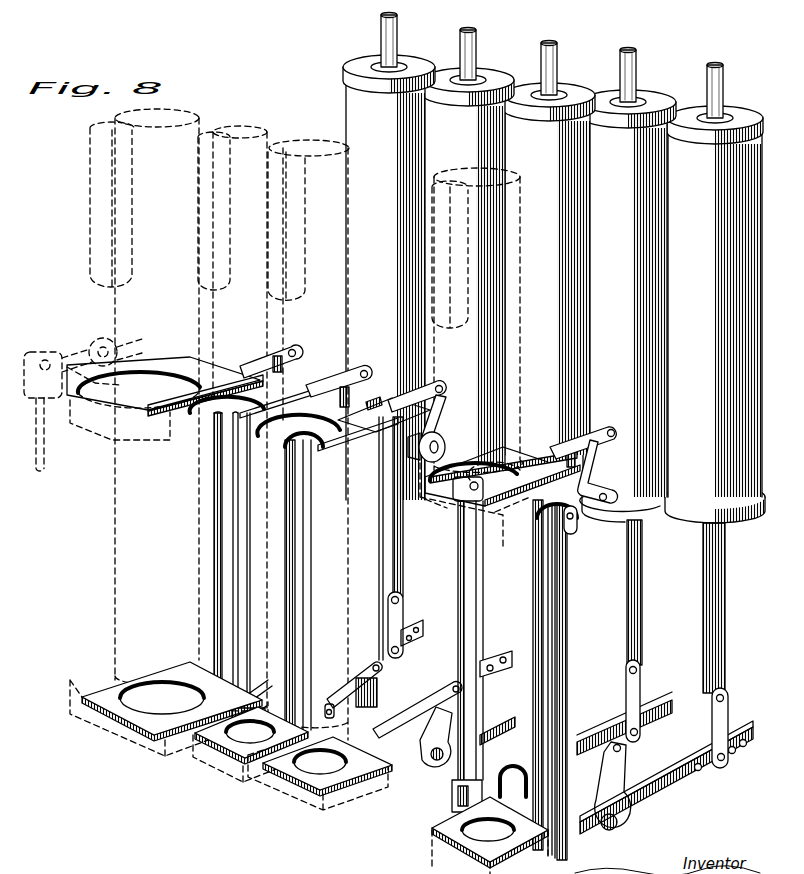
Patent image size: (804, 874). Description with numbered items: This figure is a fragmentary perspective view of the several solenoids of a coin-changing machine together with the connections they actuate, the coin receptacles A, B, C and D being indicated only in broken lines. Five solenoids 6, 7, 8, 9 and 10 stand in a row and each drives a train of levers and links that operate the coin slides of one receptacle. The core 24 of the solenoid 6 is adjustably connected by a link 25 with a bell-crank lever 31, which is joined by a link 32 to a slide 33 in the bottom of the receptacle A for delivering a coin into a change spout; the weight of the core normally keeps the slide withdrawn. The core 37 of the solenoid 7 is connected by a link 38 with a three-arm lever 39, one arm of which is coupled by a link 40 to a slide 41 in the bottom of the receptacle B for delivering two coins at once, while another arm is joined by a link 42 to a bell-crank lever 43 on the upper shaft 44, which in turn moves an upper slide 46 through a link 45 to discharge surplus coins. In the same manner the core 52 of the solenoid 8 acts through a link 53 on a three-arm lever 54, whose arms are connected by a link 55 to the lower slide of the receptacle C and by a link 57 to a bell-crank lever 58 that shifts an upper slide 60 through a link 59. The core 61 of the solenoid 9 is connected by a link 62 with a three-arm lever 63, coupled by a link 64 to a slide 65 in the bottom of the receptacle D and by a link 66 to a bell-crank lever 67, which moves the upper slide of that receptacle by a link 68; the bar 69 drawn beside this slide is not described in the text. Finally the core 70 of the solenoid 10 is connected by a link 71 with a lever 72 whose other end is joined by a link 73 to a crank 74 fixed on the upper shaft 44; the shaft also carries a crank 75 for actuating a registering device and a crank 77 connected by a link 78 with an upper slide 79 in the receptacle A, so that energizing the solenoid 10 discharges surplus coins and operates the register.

The solenoid 9 is at (410, 56).
The solenoid 7 is at (500, 68).
The solenoid 6 is at (580, 84).
The solenoid 10 is at (656, 95).
The solenoid 8 is at (745, 108).
The coin receptacle D is at (185, 112).
The coin receptacle B is at (248, 128).
The coin receptacle A is at (307, 140).
The coin receptacle C is at (509, 178).
The crank 75 is at (65, 350).
The upper shaft 44 is at (143, 363).
The support bar 69 is at (218, 366).
The link 68 is at (255, 352).
The bell-crank lever 67 is at (283, 368).
The link 66 is at (238, 560).
The link 64 is at (265, 643).
The slide 65 is at (152, 733).
The upper slide 46 is at (295, 387).
The link 45 is at (333, 385).
The bell-crank lever 43 is at (368, 403).
The upper slide 79 is at (372, 407).
The link 78 is at (437, 381).
The crank 77 is at (437, 410).
The link 42 is at (300, 596).
The core 61 is at (402, 572).
The link 62 is at (403, 620).
The three-arm lever 63 is at (348, 660).
The link 40 is at (377, 688).
The three-arm lever 39 is at (431, 690).
The link 32 is at (430, 707).
The slide 41 is at (238, 755).
The slide 33 is at (320, 791).
The crank 74 is at (455, 492).
The upper slide 60 is at (527, 453).
The link 59 is at (583, 432).
The bell-crank lever 58 is at (605, 488).
The core 37 is at (530, 556).
The core 24 is at (567, 625).
The link 25 is at (556, 672).
The link 57 is at (568, 592).
The link 38 is at (481, 652).
The bell-crank lever 31 is at (493, 720).
The link 73 is at (481, 760).
The lever 72 is at (595, 734).
The link 55 is at (607, 762).
The three-arm lever 54 is at (684, 788).
The link 71 is at (644, 696).
The link 53 is at (729, 718).
The core 70 is at (643, 592).
The core 52 is at (727, 605).